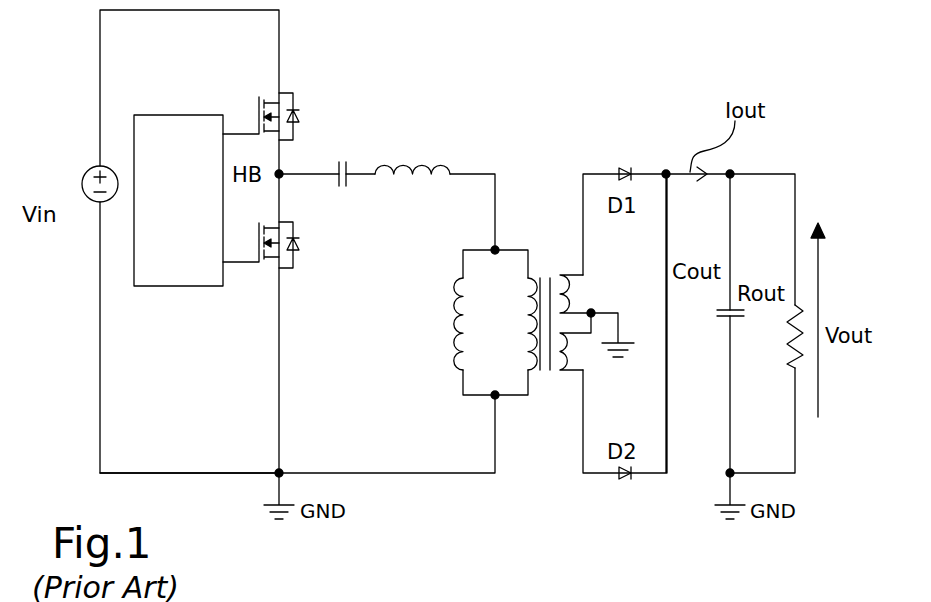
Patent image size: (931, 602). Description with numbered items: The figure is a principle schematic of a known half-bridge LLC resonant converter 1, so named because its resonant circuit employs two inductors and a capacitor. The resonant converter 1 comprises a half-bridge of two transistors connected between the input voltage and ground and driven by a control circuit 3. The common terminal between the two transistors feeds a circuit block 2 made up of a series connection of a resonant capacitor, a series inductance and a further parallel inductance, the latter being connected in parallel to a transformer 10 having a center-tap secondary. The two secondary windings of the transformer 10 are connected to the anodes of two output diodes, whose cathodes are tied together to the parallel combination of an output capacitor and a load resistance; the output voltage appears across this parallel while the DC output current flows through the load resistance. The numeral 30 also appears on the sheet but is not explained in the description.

The resonant converter 1 is at (303, 69).
The circuit block 2 is at (397, 126).
The control circuit 3 is at (155, 287).
The transformer 10 is at (545, 264).
The resonant converter 30 is at (260, 601).